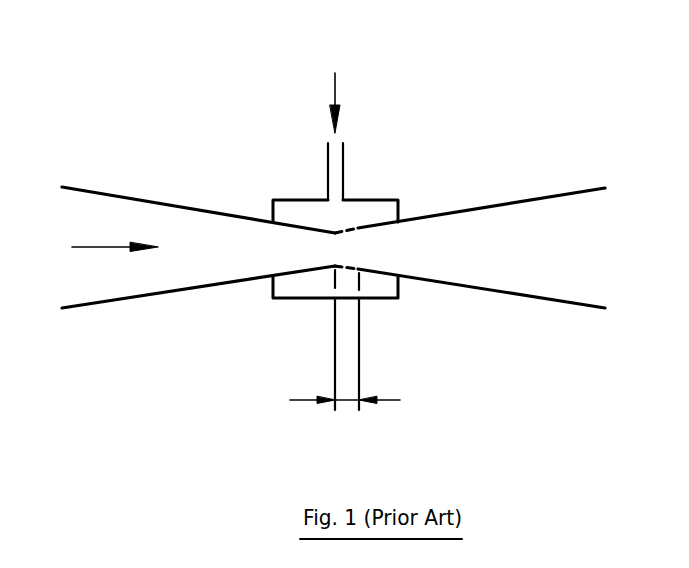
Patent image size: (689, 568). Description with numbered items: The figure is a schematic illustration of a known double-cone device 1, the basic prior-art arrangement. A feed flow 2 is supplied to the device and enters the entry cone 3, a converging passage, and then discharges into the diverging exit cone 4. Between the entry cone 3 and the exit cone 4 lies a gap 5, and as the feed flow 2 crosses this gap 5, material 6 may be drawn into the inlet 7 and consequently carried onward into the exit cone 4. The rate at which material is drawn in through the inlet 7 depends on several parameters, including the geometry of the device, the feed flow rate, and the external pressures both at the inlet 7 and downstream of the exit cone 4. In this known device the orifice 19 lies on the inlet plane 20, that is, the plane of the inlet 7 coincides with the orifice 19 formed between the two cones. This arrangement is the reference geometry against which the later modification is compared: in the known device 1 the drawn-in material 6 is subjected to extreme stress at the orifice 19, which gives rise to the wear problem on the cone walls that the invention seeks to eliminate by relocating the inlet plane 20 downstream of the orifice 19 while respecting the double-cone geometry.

The double-cone device 1 is at (127, 97).
The feed flow 2 is at (110, 247).
The entry cone 3 is at (125, 303).
The exit cone 4 is at (547, 302).
The gap 5 is at (400, 400).
The material 6 is at (335, 92).
The inlet 7 is at (345, 168).
The orifice 19 is at (335, 266).
The inlet plane 20 is at (335, 360).